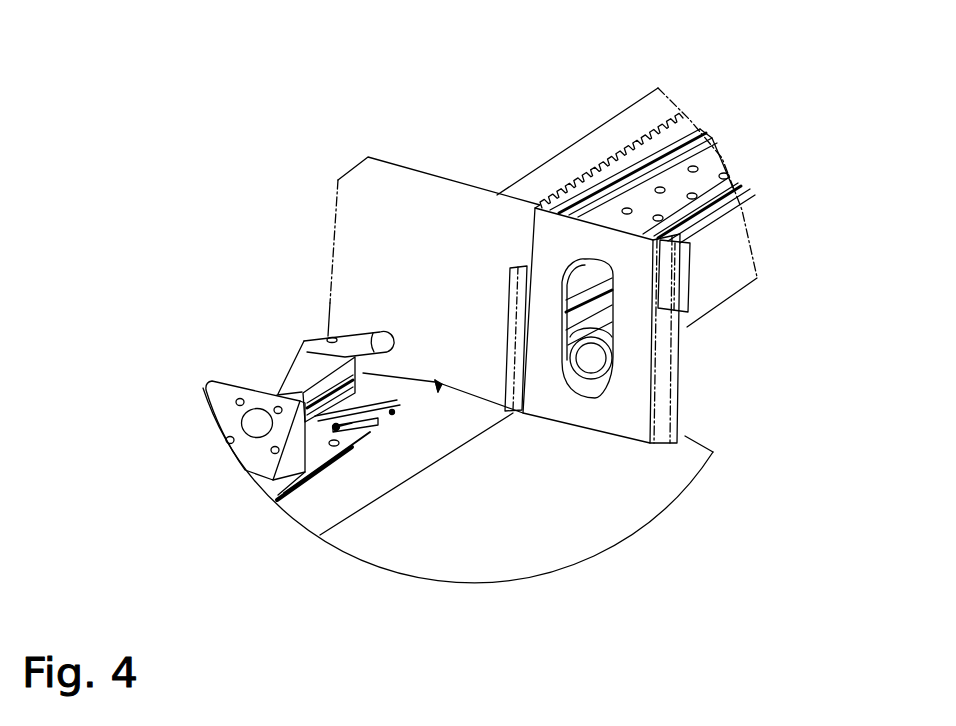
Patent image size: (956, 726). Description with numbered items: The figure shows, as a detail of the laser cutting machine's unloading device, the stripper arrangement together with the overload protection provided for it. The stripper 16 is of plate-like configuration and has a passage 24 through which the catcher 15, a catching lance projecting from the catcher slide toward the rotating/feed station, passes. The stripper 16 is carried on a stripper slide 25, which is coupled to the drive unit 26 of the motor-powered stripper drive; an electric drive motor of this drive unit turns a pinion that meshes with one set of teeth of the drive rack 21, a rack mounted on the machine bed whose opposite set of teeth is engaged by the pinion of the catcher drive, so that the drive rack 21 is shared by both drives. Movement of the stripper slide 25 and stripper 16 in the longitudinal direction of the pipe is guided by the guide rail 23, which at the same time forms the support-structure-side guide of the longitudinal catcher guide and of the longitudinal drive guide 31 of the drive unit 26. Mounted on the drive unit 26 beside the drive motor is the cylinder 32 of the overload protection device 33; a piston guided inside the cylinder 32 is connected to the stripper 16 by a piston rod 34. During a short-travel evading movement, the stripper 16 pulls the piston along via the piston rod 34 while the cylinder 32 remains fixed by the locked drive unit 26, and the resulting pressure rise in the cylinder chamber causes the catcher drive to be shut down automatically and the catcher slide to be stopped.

The catcher 15 is at (596, 355).
The stripper 16 is at (690, 394).
The drive rack 21 is at (648, 138).
The guide rail 23 is at (708, 163).
The passage 24 is at (610, 291).
The stripper slide 25 is at (415, 397).
The drive unit 26 is at (338, 460).
The longitudinal drive guide 31 is at (372, 448).
The cylinder 32 is at (297, 372).
The overload protection device 33 is at (303, 349).
The piston rod 34 is at (374, 336).